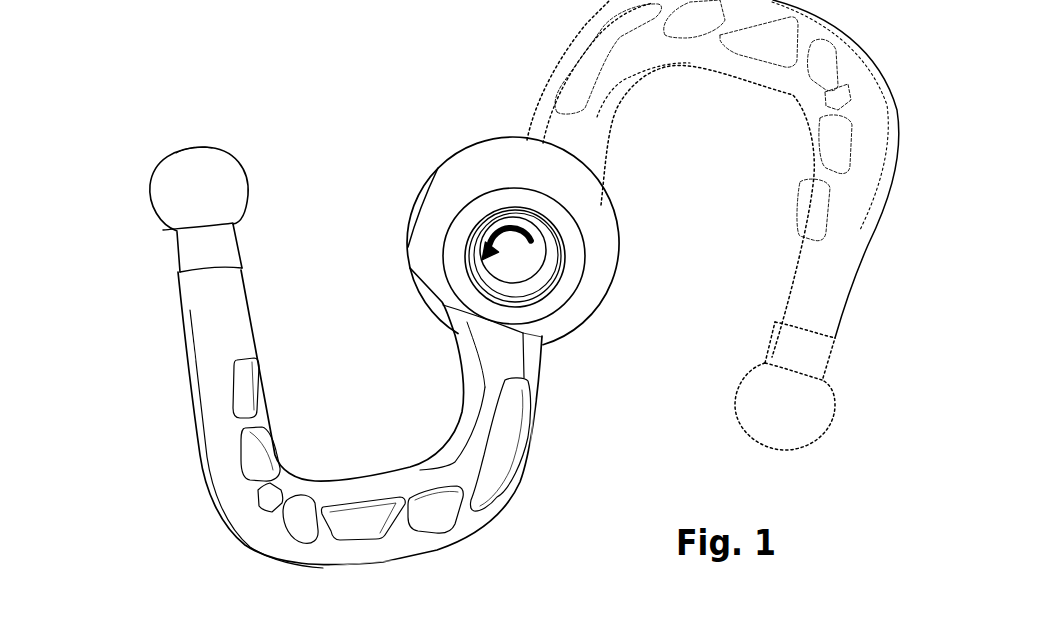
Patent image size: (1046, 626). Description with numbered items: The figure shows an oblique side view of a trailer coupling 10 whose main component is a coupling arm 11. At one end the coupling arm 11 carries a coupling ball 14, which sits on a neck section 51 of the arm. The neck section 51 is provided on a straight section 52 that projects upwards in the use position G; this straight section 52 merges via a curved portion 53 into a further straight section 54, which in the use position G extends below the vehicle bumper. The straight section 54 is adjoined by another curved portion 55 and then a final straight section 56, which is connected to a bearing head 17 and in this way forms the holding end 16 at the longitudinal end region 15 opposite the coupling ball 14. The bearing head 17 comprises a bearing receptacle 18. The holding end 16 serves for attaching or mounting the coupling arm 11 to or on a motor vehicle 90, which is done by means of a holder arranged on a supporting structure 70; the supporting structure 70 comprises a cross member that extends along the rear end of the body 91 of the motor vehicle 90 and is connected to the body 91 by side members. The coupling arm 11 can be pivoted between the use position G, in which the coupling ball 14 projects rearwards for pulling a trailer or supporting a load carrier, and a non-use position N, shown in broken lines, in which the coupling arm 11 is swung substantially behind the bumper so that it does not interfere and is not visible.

The trailer coupling 10 is at (128, 125).
The coupling arm 11 is at (236, 132).
The neck section 51 is at (190, 255).
The use position G is at (168, 332).
The straight section 52 is at (203, 423).
The curved portion 53 is at (252, 535).
The straight section 54 is at (366, 554).
The straight section 56 is at (470, 352).
The longitudinal end region 15 is at (530, 380).
The curved portion 55 is at (537, 440).
The holding end 16 is at (625, 195).
The bearing head 17 is at (437, 265).
The bearing receptacle 18 is at (557, 268).
The non-use position N is at (767, 112).
The coupling ball 14 is at (742, 426).
The motor vehicle 90 is at (68, 625).
The body 91 is at (47, 621).
The supporting structure 70 is at (242, 621).